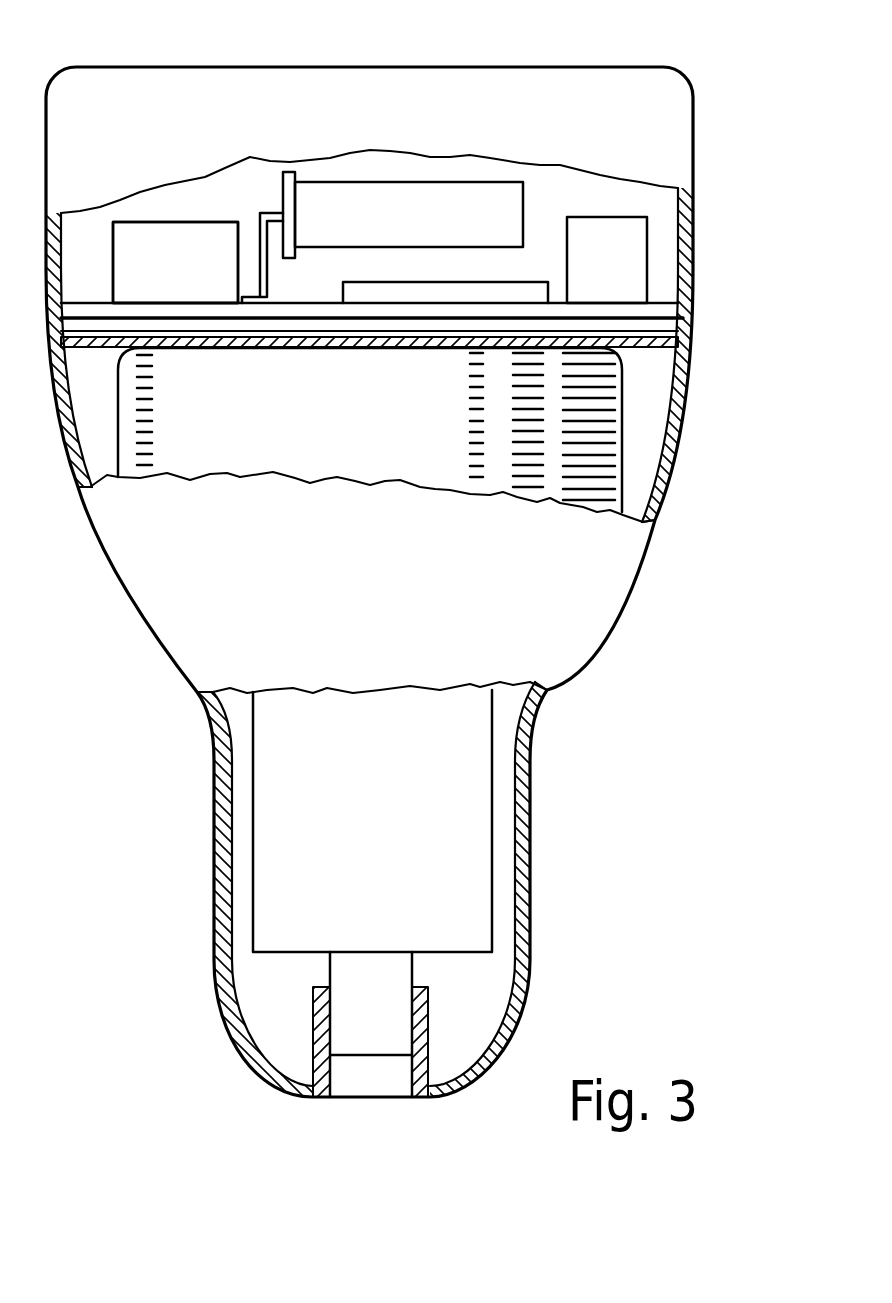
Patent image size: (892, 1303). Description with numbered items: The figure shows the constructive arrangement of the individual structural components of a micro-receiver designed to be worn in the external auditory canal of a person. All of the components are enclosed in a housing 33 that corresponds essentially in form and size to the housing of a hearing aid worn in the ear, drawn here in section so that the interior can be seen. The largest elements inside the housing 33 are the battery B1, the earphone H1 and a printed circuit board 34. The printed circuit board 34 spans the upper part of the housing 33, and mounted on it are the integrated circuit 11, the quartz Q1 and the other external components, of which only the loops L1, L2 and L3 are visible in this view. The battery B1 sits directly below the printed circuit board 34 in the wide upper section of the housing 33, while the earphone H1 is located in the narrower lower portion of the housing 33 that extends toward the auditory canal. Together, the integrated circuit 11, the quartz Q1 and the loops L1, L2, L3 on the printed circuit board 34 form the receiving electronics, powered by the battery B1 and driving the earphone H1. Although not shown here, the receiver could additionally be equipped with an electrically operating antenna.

The housing 33 is at (607, 613).
The printed circuit board 34 is at (673, 311).
The loop L2 is at (168, 233).
The loop L3 is at (168, 233).
The quartz Q1 is at (390, 193).
The integrated circuit 11 is at (408, 292).
The loop L1 is at (608, 232).
The battery B1 is at (607, 443).
The earphone H1 is at (465, 799).